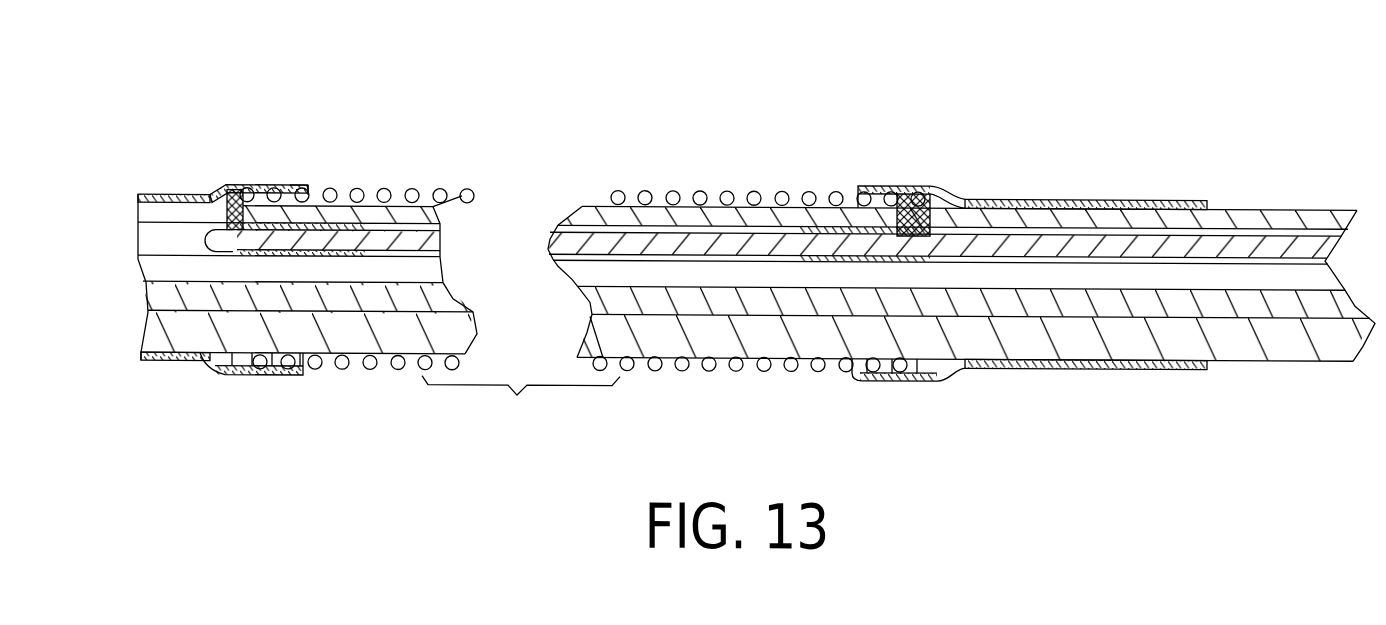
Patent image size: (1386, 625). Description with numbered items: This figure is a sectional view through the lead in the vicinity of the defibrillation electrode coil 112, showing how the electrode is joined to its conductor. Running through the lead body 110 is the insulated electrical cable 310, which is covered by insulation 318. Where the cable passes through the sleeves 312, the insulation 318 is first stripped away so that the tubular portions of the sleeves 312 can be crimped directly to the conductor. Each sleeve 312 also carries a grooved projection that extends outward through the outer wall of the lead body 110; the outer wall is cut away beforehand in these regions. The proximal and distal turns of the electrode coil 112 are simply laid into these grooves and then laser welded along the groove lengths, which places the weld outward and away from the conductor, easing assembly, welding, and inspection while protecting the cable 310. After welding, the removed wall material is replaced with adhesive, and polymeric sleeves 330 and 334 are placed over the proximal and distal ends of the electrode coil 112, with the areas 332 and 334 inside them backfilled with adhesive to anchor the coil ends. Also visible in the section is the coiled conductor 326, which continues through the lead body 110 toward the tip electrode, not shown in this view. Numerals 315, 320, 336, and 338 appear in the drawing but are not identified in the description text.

The lead body 110 is at (1297, 339).
The defibrillation electrode coil 112 is at (292, 359).
The insulated electrical cable 310 is at (1254, 229).
The sleeve 312 is at (850, 262).
The seal block 315 is at (920, 236).
The insulation 318 is at (1141, 241).
The inner tube layer 320 is at (1222, 225).
The coiled conductor 326 is at (612, 303).
The polymeric sleeve 330 is at (267, 186).
The backfilled area 332 is at (305, 186).
The polymeric sleeve 334 is at (882, 194).
The thin band 336 is at (985, 197).
The end cap 338 is at (189, 258).